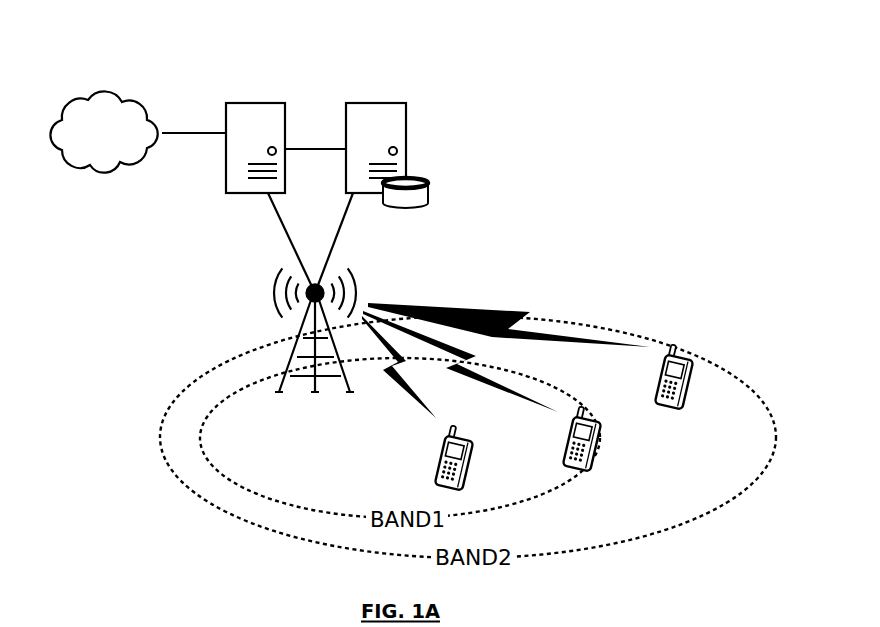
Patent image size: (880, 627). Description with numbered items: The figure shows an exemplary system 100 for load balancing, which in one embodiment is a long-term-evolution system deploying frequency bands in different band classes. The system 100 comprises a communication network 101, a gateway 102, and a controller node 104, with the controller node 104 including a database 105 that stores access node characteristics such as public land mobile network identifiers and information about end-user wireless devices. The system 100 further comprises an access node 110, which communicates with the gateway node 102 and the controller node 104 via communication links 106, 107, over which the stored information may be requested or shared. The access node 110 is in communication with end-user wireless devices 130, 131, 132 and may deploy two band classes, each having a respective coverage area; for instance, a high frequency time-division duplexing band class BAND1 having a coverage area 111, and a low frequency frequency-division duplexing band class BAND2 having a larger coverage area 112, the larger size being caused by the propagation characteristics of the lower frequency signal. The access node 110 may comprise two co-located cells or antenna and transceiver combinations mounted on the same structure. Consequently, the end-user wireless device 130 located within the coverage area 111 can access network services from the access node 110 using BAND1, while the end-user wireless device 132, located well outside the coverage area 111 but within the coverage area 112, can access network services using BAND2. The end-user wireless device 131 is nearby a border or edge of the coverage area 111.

The system 100 is at (634, 186).
The communication network 101 is at (123, 141).
The gateway 102 is at (238, 103).
The controller node 104 is at (387, 102).
The database 105 is at (431, 181).
The communication link 106 is at (284, 227).
The communication link 107 is at (342, 227).
The access node 110 is at (292, 360).
The coverage area 111 is at (200, 435).
The coverage area 112 is at (188, 390).
The end-user wireless device 130 is at (439, 466).
The end-user wireless device 131 is at (567, 449).
The end-user wireless device 132 is at (659, 391).